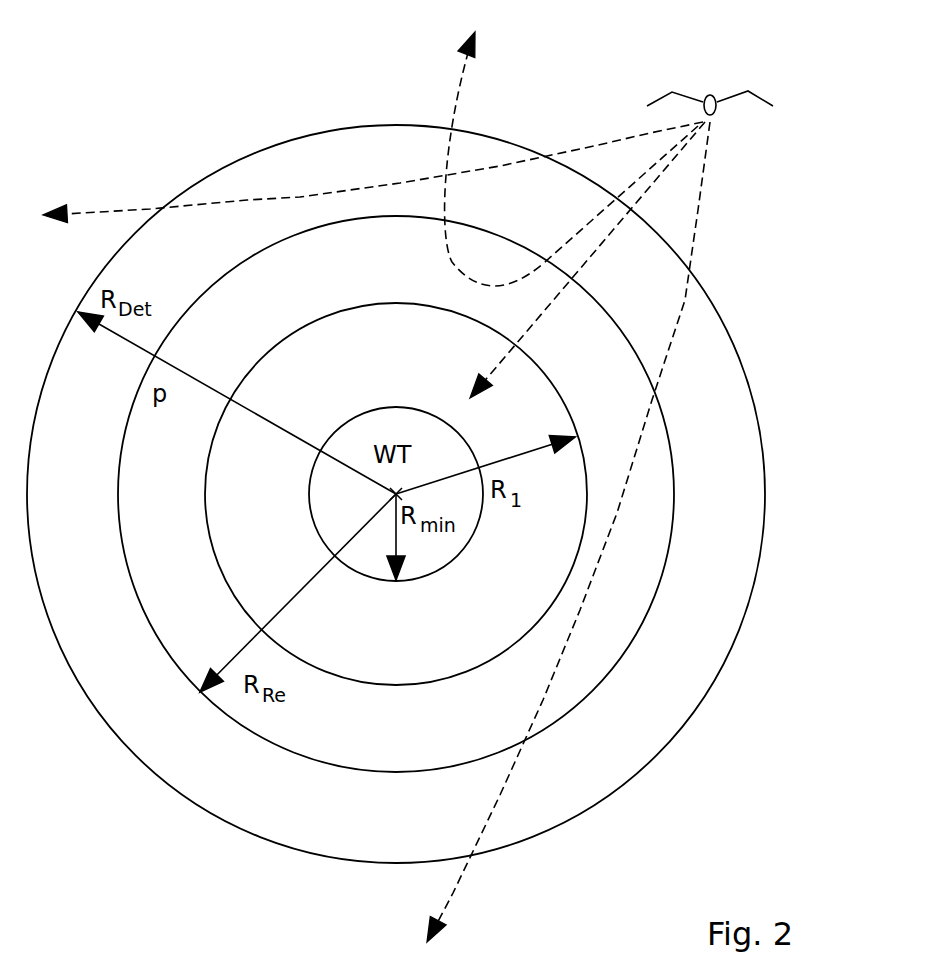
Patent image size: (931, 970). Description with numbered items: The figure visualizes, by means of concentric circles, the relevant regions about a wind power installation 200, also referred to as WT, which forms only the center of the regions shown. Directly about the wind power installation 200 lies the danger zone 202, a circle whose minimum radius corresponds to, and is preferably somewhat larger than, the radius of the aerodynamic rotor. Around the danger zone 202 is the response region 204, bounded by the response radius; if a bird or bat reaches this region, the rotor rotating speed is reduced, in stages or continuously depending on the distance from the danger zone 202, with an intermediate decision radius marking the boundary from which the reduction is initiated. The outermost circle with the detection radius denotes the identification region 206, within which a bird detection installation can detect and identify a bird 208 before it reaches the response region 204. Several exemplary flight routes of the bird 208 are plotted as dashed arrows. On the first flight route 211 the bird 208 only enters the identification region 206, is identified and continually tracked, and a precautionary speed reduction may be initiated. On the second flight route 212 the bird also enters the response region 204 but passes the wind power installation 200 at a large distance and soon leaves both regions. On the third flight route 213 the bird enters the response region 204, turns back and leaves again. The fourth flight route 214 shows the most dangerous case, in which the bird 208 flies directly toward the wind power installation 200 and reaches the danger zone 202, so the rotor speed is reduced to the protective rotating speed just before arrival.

The wind power installation 200 is at (392, 432).
The danger zone 202 is at (345, 457).
The response region 204 is at (396, 494).
The identification region 206 is at (396, 494).
The bird 208 is at (720, 77).
The first flight route 211 is at (247, 200).
The second flight route 212 is at (453, 893).
The third flight route 213 is at (462, 95).
The fourth flight route 214 is at (533, 327).